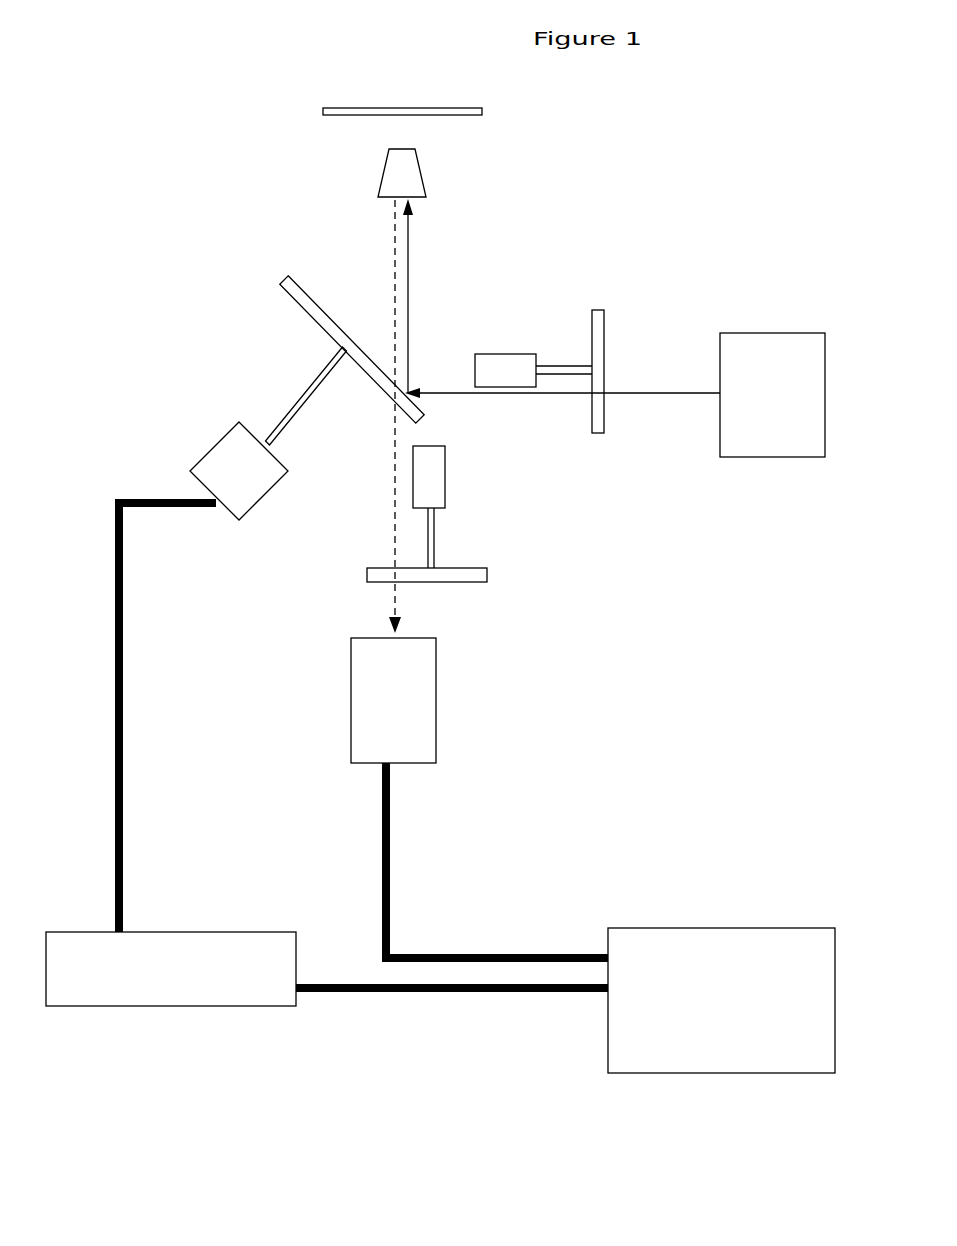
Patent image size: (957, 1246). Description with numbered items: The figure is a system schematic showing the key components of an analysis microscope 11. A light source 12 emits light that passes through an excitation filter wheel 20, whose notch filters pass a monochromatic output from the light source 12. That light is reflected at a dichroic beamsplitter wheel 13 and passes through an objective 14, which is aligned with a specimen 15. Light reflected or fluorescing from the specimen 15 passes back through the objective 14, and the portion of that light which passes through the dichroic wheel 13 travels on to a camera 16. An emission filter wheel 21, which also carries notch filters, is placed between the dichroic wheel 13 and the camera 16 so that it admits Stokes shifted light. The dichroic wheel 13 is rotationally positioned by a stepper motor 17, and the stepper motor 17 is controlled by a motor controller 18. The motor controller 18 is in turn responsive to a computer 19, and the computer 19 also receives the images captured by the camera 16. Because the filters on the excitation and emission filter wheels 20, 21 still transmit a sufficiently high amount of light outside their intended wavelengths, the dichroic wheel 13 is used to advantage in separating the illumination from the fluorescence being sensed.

The analysis microscope 11 is at (722, 135).
The light source 12 is at (720, 352).
The dichroic beamsplitter wheel 13 is at (305, 315).
The objective 14 is at (383, 177).
The specimen 15 is at (462, 115).
The camera 16 is at (418, 638).
The stepper motor 17 is at (252, 513).
The motor controller 18 is at (173, 932).
The computer 19 is at (629, 928).
The excitation filter wheel 20 is at (592, 328).
The emission filter wheel 21 is at (463, 568).